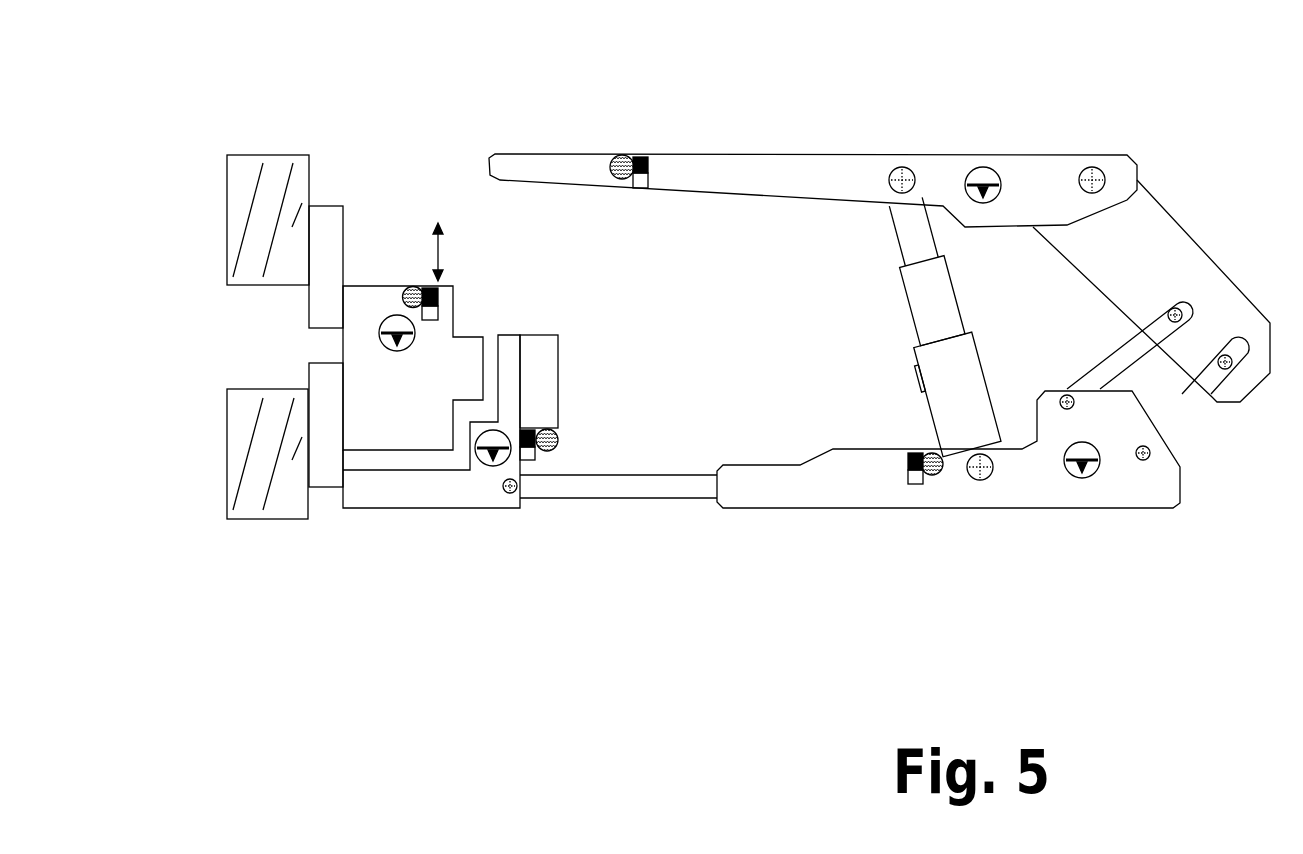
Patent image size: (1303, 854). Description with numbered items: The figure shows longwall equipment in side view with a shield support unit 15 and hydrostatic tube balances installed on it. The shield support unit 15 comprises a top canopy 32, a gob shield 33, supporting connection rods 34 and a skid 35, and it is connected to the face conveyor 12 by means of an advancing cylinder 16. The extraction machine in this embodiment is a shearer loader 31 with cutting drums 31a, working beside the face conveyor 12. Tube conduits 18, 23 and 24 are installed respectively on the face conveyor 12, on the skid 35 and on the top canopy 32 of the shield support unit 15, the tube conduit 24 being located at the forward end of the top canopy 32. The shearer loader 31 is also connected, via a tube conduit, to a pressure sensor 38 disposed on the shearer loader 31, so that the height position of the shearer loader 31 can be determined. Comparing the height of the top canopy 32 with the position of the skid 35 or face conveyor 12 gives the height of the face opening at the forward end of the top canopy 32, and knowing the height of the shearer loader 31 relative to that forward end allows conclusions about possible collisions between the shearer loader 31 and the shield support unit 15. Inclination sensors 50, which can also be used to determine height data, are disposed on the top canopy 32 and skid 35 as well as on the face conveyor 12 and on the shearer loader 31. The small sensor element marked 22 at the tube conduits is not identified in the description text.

The face conveyor 12 is at (395, 495).
The shield support unit 15 is at (1160, 139).
The advancing cylinder 16 is at (598, 500).
The tube conduit 18 is at (546, 452).
The sensor / magnet element 22 is at (642, 155).
The tube conduit 23 is at (935, 476).
The tube conduit 24 is at (618, 156).
The shearer loader 31 is at (393, 393).
The cutting drums 31a is at (242, 230).
The top canopy 32 is at (753, 167).
The gob shield 33 is at (1160, 250).
The supporting connection rods 34 is at (1133, 343).
The skid 35 is at (787, 490).
The pressure sensor 38 is at (403, 297).
The inclination sensors 50 is at (378, 334).